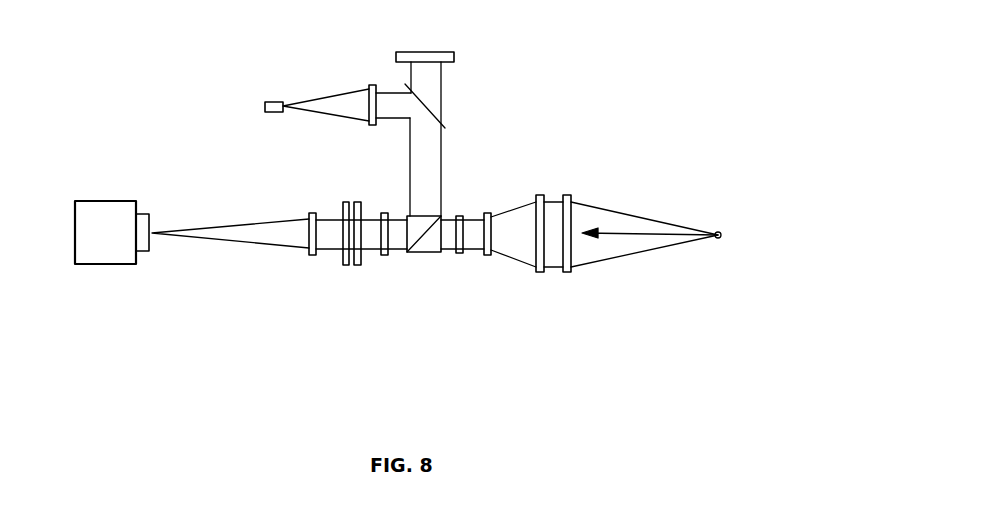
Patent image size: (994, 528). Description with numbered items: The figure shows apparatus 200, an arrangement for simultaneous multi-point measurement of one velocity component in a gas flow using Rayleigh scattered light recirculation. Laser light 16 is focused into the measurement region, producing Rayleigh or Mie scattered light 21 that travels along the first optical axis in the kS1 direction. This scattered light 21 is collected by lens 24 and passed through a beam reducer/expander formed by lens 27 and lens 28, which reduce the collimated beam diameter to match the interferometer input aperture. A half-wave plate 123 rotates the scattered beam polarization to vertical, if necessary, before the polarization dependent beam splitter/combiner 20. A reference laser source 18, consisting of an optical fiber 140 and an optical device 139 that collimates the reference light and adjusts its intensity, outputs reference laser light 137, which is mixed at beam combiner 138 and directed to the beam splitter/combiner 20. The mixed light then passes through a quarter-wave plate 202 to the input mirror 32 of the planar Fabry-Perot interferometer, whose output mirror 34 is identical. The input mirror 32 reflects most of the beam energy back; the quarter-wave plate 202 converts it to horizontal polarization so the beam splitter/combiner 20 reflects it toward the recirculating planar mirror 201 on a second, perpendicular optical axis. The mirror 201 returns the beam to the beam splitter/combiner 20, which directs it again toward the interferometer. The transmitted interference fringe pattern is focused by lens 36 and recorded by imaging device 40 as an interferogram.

The imaging device 40 is at (93, 265).
The lens 36 is at (313, 254).
The output mirror 34 is at (343, 263).
The input mirror 32 is at (354, 263).
The quarter-wave plate 202 is at (383, 253).
The polarization dependent beam splitter/combiner 20 is at (432, 253).
The half-wave plate 123 is at (458, 251).
The lens 28 is at (488, 253).
The lens 27 is at (540, 270).
The lens 24 is at (567, 270).
The Rayleigh or Mie scattered light 21 is at (588, 204).
The laser light 16 is at (721, 231).
The k_S1 direction kS1 is at (612, 235).
The apparatus 200 is at (592, 112).
The planar mirror 201 is at (438, 52).
The beam combiner 138 is at (442, 127).
The optical device 139 is at (369, 87).
The optical fiber 140 is at (270, 102).
The reference laser source 18 is at (292, 86).
The reference laser light 137 is at (401, 122).